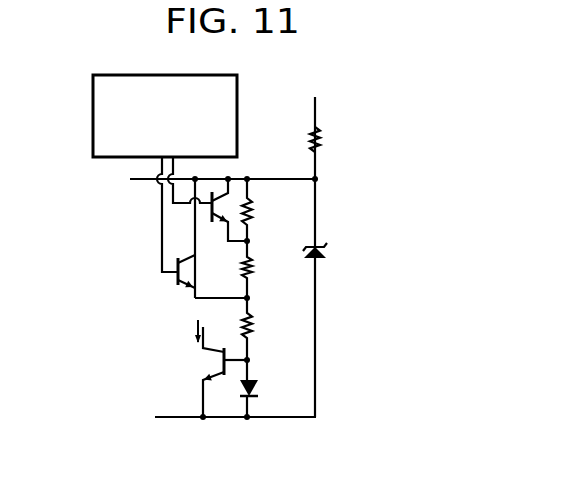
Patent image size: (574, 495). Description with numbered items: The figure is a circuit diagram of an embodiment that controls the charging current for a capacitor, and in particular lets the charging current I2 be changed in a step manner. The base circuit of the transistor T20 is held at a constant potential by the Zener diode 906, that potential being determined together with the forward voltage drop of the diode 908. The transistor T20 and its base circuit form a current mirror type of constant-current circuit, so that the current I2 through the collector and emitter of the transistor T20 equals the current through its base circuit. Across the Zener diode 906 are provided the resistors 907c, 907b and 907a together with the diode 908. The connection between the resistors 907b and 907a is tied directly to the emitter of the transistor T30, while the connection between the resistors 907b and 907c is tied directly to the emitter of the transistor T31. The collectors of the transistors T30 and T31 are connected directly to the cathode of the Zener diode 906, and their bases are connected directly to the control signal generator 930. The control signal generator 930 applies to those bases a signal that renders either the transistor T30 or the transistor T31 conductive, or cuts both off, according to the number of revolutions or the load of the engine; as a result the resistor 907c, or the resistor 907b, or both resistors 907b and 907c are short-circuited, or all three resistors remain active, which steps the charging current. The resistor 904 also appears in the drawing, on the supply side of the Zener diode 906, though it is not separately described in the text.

The control signal generator 930 is at (237, 98).
The resistor 904 is at (320, 140).
The Zener diode 906 is at (326, 254).
The resistor 907a is at (252, 330).
The resistor 907b is at (252, 279).
The resistor 907c is at (252, 214).
The diode 908 is at (258, 387).
The transistor T31 is at (225, 204).
The transistor T30 is at (173, 277).
The transistor T20 is at (220, 359).
The charging current I2 is at (189, 330).